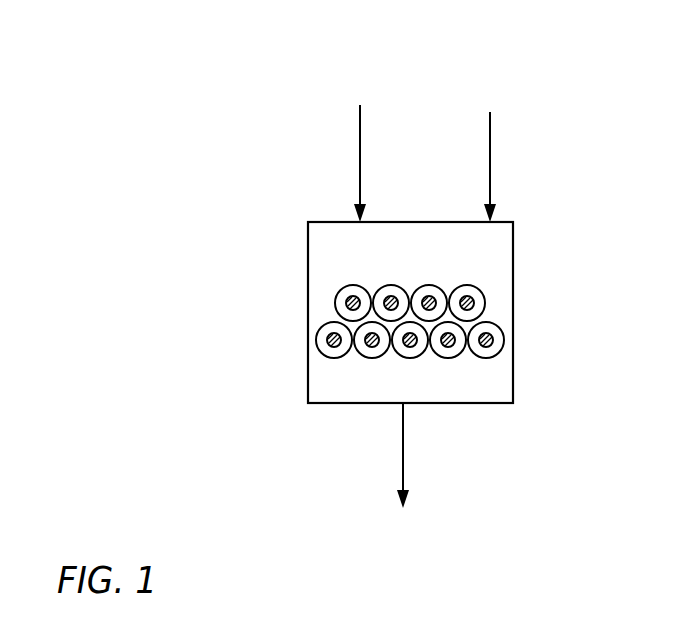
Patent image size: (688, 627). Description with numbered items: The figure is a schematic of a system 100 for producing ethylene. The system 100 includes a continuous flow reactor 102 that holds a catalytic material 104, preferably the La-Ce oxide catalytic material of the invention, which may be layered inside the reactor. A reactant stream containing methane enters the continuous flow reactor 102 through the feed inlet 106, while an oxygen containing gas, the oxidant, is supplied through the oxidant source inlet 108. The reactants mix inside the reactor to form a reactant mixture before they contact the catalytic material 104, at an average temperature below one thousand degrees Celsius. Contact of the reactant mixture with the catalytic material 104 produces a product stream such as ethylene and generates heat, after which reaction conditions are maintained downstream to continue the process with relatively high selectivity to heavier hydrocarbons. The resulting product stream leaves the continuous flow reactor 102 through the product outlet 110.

The system 100 is at (534, 106).
The continuous flow reactor 102 is at (308, 240).
The catalytic material 104 is at (317, 333).
The feed inlet 106 is at (358, 219).
The oxidant source inlet 108 is at (487, 219).
The product outlet 110 is at (400, 405).